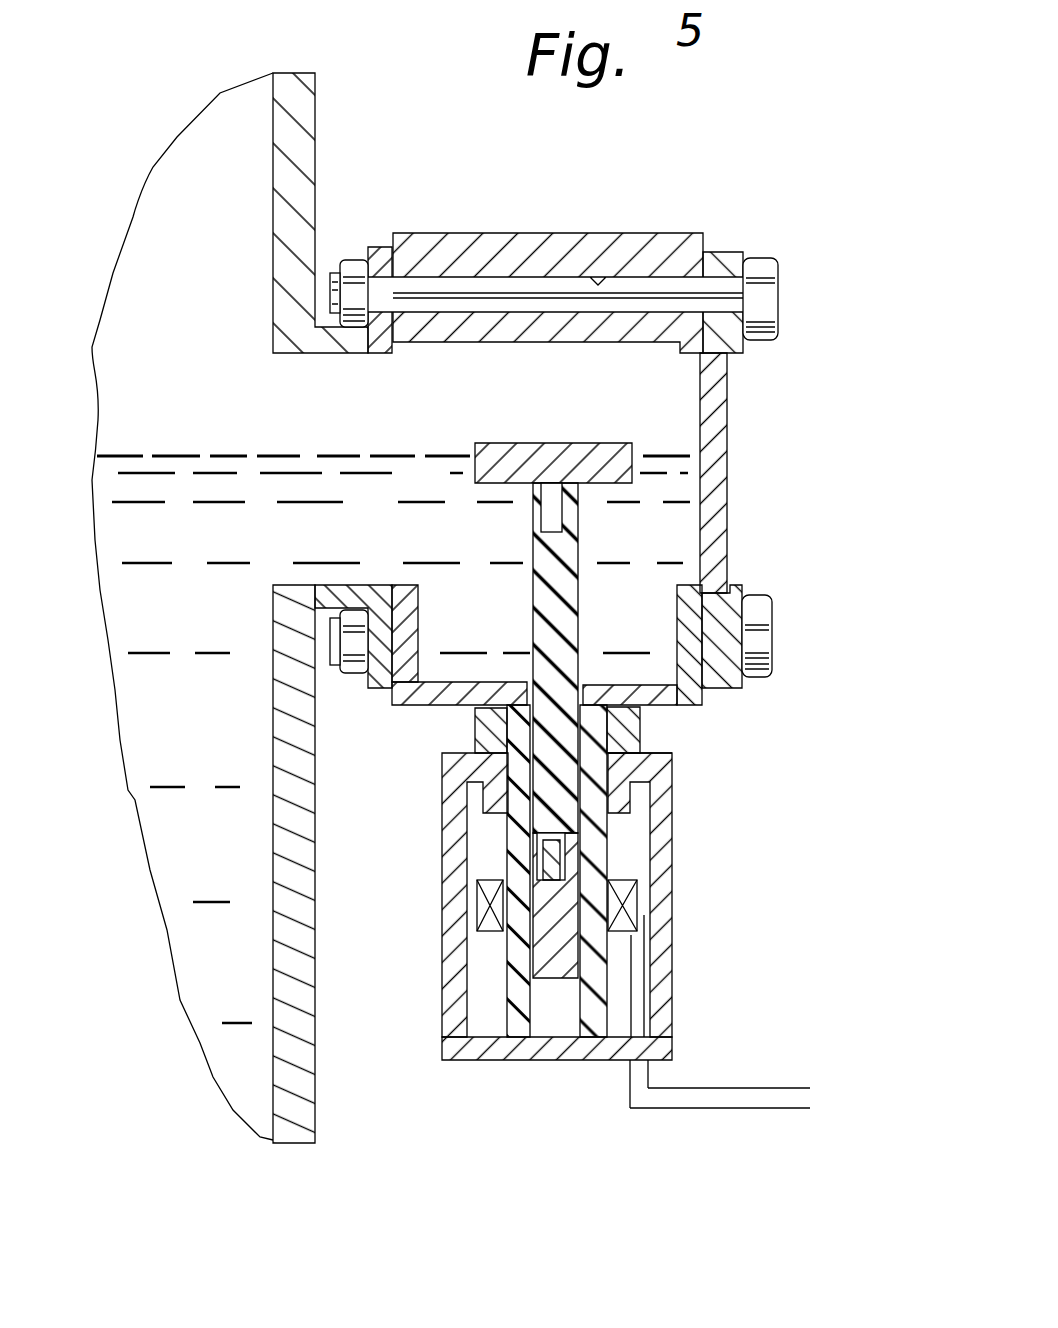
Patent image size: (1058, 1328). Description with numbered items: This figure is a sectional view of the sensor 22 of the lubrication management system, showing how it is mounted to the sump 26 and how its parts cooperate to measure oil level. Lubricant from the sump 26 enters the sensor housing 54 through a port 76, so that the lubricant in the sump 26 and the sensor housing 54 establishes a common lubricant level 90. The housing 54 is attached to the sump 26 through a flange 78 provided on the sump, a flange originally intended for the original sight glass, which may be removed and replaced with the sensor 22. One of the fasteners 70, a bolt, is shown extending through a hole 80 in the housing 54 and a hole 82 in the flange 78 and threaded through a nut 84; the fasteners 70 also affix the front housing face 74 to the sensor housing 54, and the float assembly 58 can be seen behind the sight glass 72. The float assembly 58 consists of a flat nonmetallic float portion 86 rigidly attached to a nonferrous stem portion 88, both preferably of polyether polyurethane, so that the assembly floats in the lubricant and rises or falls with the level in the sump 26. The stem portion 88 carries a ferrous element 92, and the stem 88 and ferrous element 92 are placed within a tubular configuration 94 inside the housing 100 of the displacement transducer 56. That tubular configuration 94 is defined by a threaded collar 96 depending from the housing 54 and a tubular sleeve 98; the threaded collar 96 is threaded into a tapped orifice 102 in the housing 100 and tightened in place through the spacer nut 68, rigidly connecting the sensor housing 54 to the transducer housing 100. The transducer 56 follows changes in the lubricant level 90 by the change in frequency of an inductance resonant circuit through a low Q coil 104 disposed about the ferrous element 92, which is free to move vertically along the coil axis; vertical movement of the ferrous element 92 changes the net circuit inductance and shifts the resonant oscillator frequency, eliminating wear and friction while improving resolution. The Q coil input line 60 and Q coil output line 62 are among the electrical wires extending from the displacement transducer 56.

The sensor 22 is at (572, 631).
The sump 26 is at (300, 952).
The sensor housing 54 is at (730, 568).
The displacement transducer 56 is at (615, 1065).
The float assembly 58 is at (632, 443).
The Q coil input line 60 is at (692, 1088).
The Q coil output line 62 is at (706, 1109).
The spacer nut 68 is at (478, 728).
The fasteners 70 is at (758, 265).
The sight glass 72 is at (728, 383).
The front housing face 74 is at (741, 690).
The port 76 is at (303, 383).
The flange 78 is at (458, 235).
The hole 80 is at (598, 280).
The hole 82 is at (394, 280).
The nut 84 is at (352, 262).
The float portion 86 is at (568, 443).
The stem portion 88 is at (568, 557).
The lubricant level 90 is at (128, 455).
The ferrous element 92 is at (567, 966).
The tubular configuration 94 is at (545, 1020).
The threaded collar 96 is at (668, 756).
The tubular sleeve 98 is at (602, 1006).
The housing 100 is at (442, 1032).
The tapped orifice 102 is at (674, 763).
The Q coil 104 is at (642, 913).